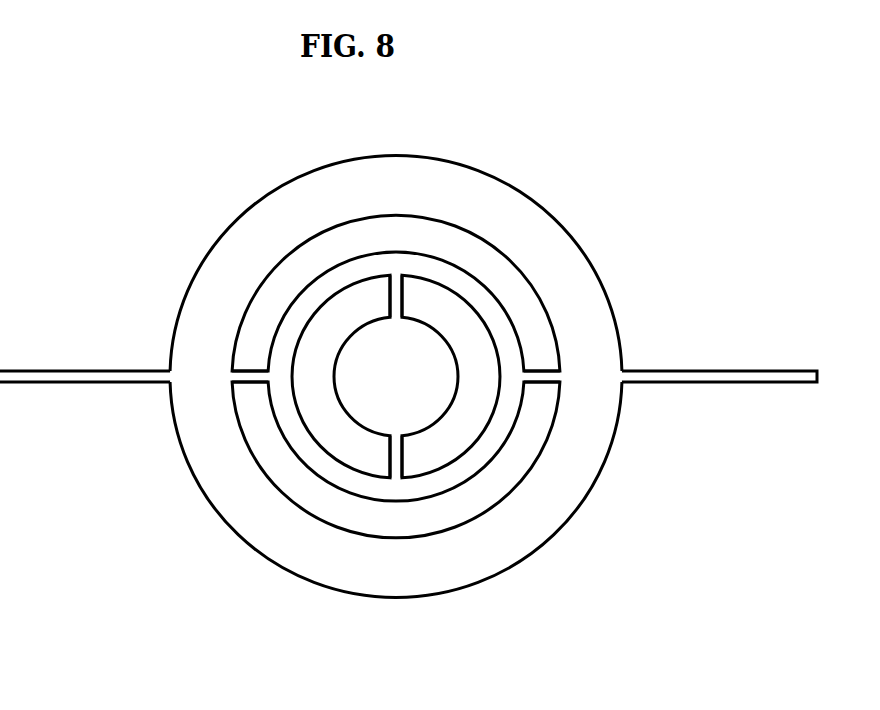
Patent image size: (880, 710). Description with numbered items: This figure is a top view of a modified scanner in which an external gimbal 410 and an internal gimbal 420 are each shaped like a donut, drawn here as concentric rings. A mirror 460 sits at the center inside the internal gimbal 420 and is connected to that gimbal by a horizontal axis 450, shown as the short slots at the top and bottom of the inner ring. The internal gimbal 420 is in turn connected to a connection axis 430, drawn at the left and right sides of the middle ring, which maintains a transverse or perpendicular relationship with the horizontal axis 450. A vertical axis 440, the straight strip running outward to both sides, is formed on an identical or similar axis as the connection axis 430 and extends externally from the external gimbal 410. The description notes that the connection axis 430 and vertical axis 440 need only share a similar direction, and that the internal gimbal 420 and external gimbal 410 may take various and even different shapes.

The external gimbal 410 is at (580, 468).
The internal gimbal 420 is at (458, 470).
The connection axis 430 is at (247, 375).
The vertical axis 440 is at (769, 378).
The horizontal axis 450 is at (395, 455).
The mirror 460 is at (363, 403).